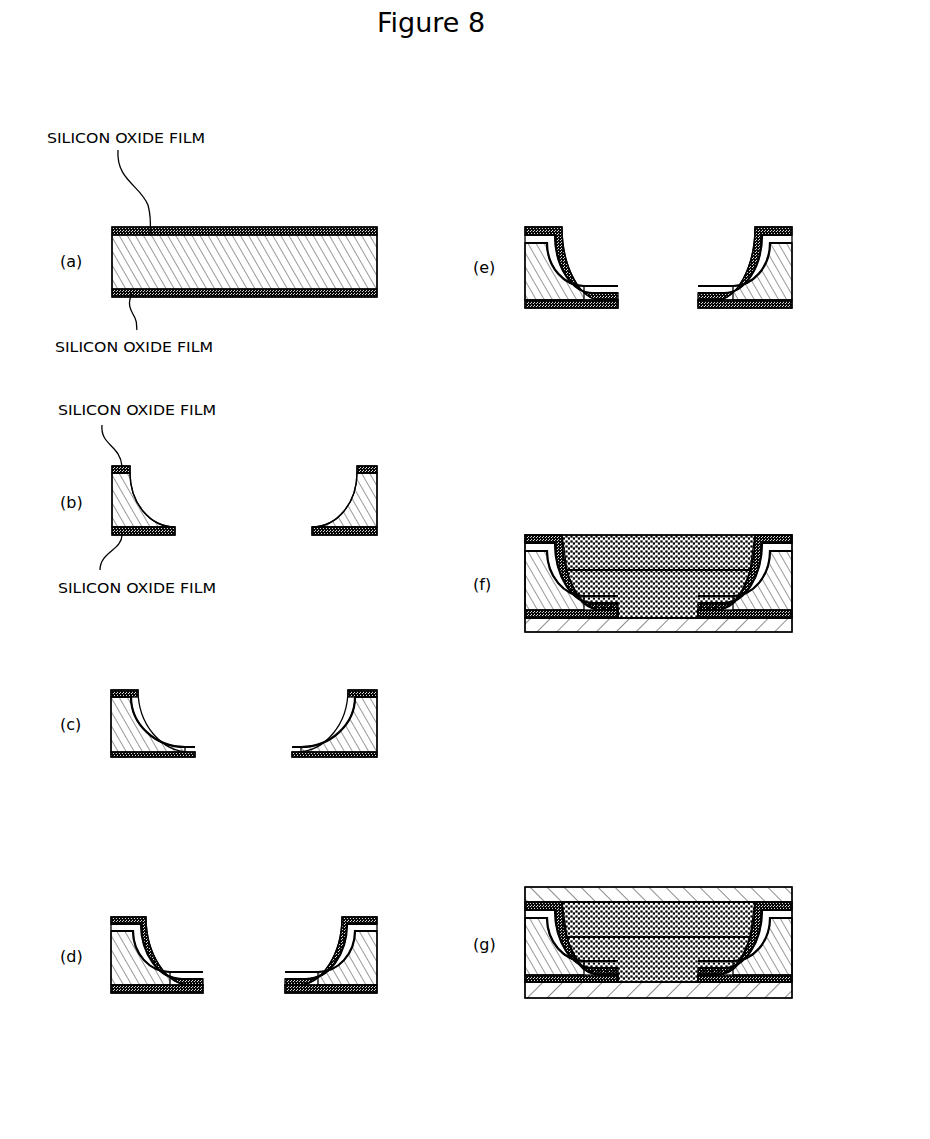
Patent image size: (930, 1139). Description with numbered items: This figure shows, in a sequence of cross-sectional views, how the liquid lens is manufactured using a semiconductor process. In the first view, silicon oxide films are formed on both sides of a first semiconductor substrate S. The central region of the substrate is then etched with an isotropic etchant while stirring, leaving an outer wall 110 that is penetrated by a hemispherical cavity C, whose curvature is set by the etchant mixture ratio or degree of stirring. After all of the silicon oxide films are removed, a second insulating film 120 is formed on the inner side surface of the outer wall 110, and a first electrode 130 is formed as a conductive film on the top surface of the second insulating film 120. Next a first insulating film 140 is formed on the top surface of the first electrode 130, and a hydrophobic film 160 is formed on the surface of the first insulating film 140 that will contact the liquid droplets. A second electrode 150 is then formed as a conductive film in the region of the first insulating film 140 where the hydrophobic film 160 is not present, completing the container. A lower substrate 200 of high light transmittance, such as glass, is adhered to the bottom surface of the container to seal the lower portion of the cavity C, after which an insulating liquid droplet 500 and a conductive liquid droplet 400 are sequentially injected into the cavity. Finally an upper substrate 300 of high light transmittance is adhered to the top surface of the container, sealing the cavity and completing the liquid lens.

The first semiconductor substrate S is at (287, 247).
The cavity C is at (252, 499).
The outer wall 110 is at (368, 730).
The second insulating film 120 is at (358, 704).
The first electrode 130 is at (362, 690).
The first insulating film 140 is at (362, 918).
The second electrode 150 is at (766, 227).
The hydrophobic film 160 is at (338, 938).
The lower substrate 200 is at (749, 622).
The upper substrate 300 is at (742, 895).
The conductive liquid droplet 400 is at (605, 548).
The insulating liquid droplet 500 is at (668, 580).